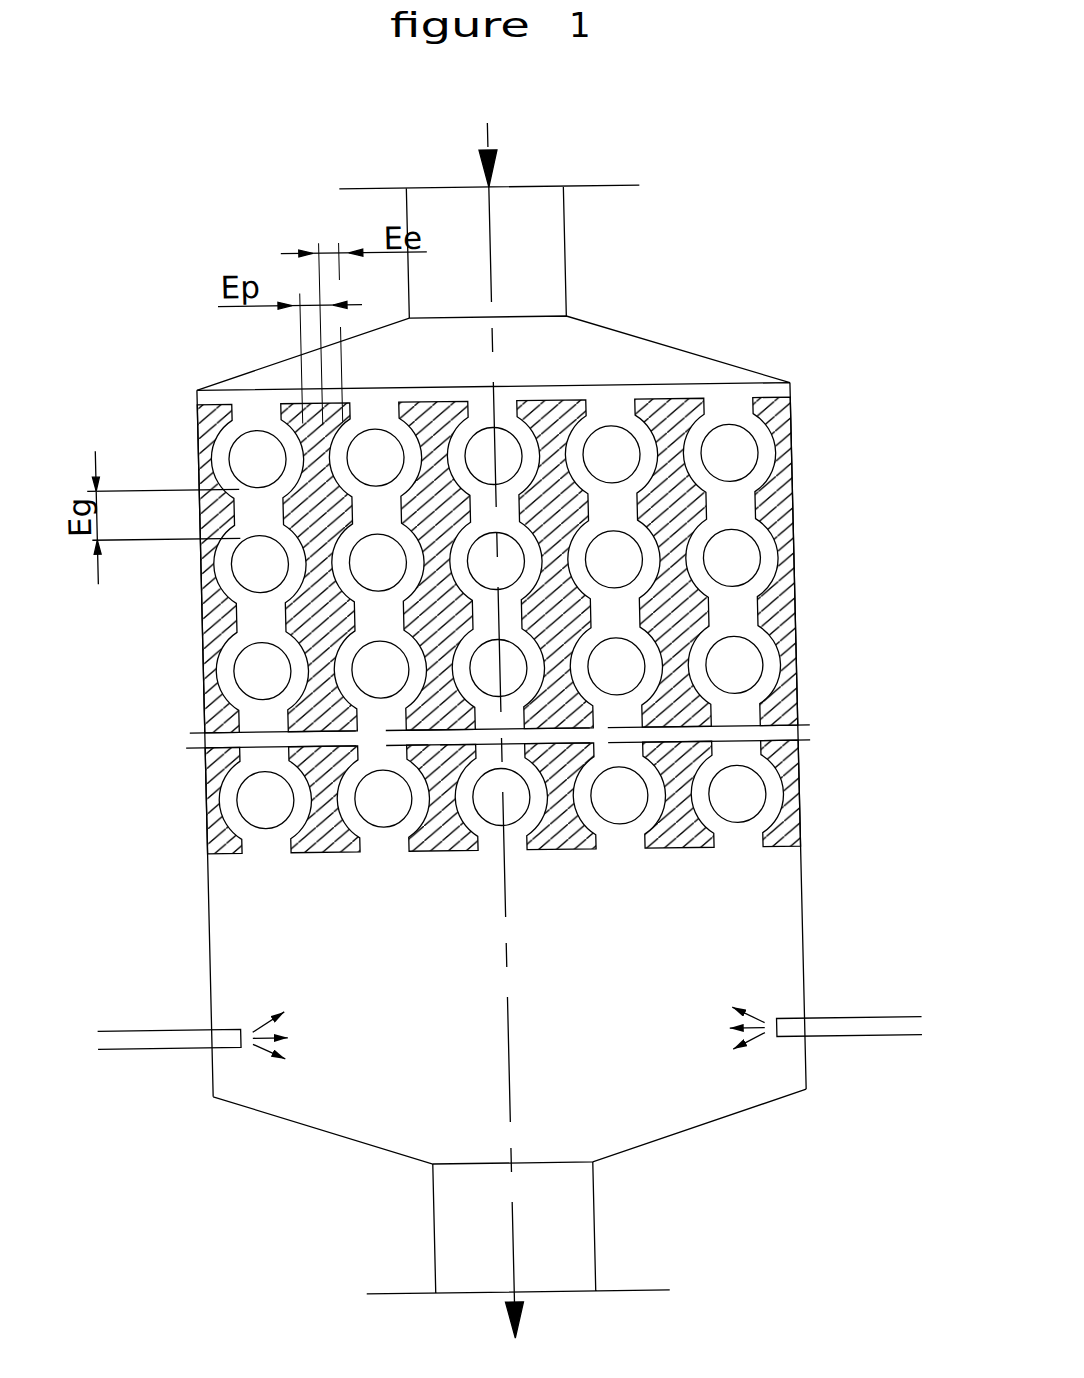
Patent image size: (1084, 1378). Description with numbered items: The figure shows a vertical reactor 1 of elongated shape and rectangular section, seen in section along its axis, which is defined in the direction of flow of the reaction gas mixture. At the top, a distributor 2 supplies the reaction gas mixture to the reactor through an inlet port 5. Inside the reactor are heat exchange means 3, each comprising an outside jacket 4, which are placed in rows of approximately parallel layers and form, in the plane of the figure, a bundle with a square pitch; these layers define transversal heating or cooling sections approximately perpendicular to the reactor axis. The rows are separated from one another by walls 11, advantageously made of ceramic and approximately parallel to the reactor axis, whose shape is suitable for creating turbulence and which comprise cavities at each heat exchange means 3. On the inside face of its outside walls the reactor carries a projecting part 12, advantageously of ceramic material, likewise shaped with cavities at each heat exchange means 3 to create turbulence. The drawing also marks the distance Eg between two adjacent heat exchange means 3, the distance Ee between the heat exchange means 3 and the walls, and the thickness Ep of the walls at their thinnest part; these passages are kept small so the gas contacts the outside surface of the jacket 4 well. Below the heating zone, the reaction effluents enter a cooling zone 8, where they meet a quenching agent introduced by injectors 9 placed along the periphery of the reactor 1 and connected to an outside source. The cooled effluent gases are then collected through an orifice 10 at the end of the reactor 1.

The vertical reactor 1 is at (259, 268).
The distributor 2 is at (629, 329).
The heat exchange means 3 is at (739, 860).
The outside jacket 4 is at (759, 803).
The inlet port 5 is at (545, 249).
The cooling zone 8 is at (657, 1113).
The injectors 9 is at (840, 1041).
The orifice 10 is at (546, 1210).
The walls 11 is at (690, 401).
The projecting part 12 is at (787, 516).